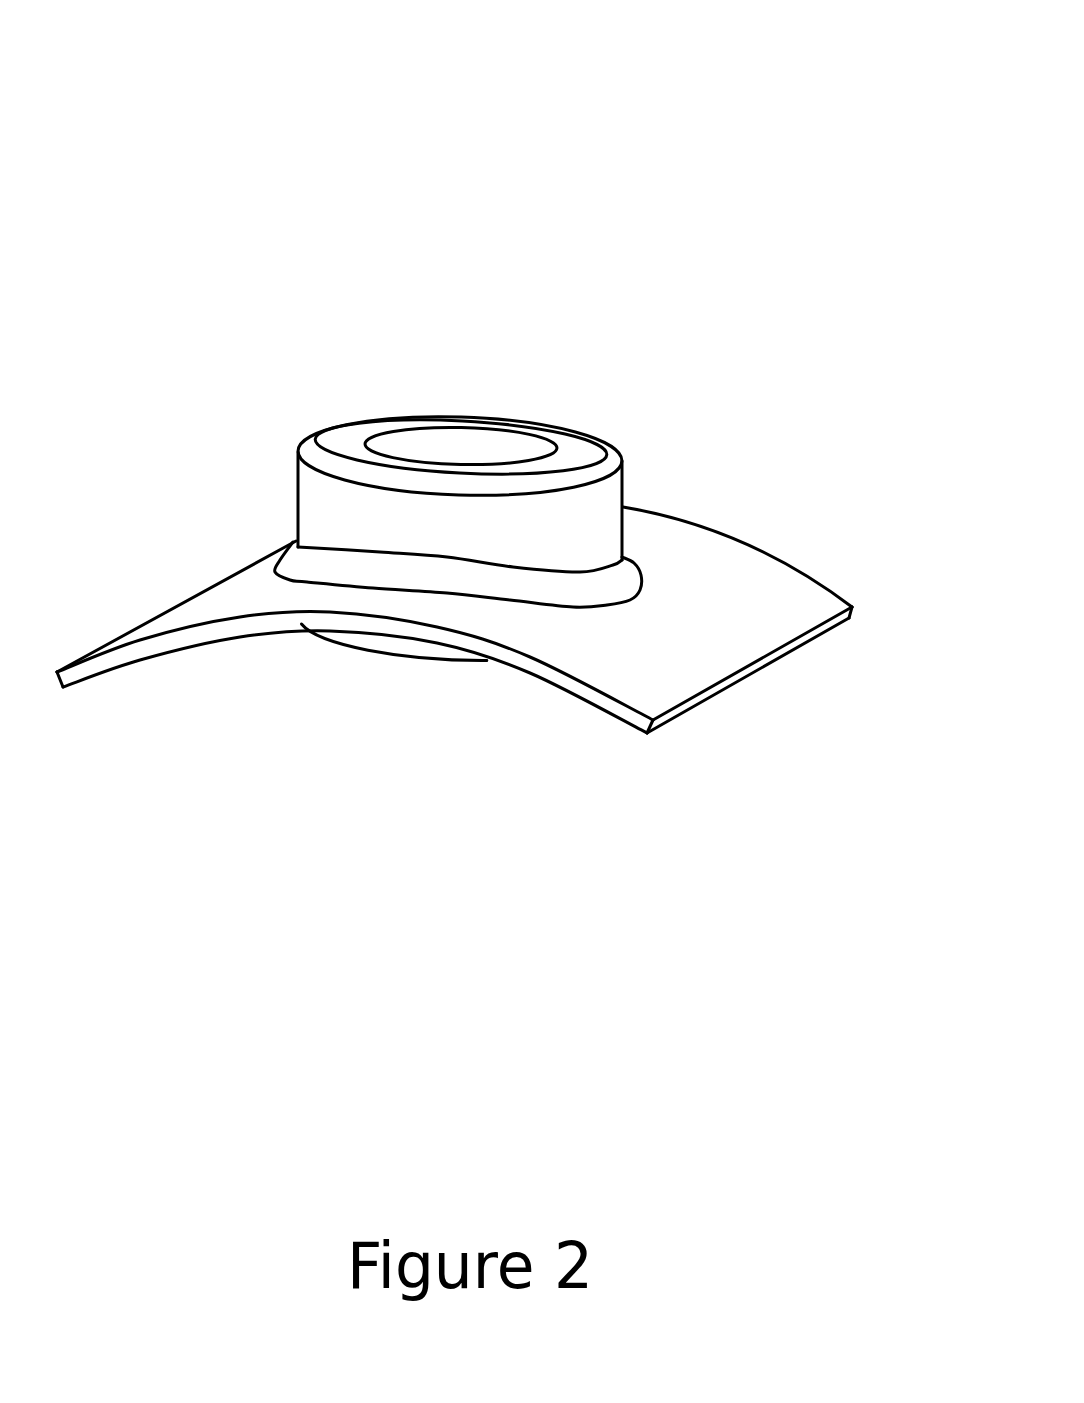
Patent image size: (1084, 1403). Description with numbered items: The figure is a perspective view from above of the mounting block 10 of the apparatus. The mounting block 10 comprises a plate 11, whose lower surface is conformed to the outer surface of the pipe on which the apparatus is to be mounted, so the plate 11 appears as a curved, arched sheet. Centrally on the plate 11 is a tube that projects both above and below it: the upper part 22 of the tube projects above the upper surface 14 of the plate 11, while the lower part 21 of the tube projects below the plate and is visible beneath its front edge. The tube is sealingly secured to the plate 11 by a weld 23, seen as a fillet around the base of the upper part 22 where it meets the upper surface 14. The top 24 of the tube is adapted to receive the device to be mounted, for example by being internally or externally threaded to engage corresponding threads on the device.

The mounting block 10 is at (768, 112).
The plate 11 is at (812, 577).
The upper surface 14 is at (657, 680).
The lower part 21 is at (410, 652).
The upper part 22 is at (583, 522).
The weld 23 is at (303, 560).
The top 24 is at (427, 445).